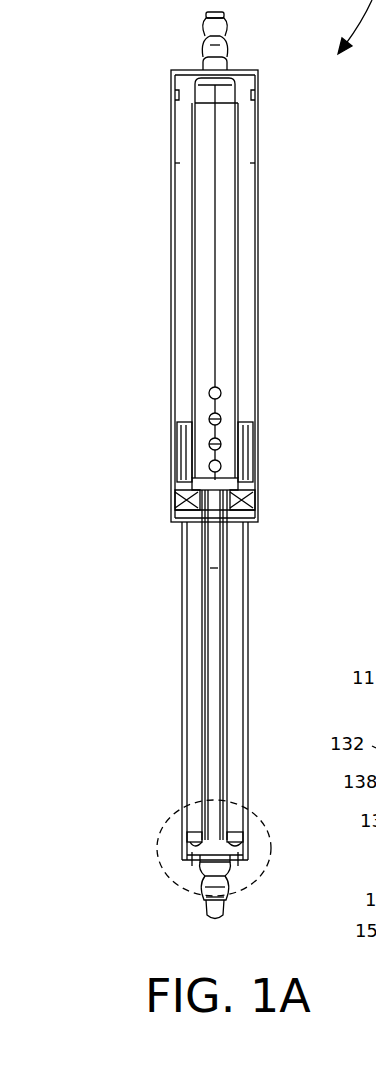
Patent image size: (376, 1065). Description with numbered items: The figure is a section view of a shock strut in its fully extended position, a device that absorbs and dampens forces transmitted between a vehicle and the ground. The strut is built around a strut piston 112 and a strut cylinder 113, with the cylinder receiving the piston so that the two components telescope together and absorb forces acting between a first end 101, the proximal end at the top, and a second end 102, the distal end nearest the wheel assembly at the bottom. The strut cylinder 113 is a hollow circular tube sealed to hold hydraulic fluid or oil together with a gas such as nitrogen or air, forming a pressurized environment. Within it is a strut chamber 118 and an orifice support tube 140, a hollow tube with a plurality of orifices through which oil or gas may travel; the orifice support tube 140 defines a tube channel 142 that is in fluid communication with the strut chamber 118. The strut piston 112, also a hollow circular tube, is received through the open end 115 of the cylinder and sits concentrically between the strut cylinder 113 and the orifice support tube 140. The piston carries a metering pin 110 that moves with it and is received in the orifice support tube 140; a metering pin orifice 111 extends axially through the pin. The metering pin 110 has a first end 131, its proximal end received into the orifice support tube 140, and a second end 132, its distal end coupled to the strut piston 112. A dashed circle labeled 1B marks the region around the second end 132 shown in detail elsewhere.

The first end 101 is at (158, 41).
The second end 102 is at (135, 898).
The metering pin 110 is at (205, 710).
The metering pin orifice 111 is at (208, 752).
The strut piston 112 is at (182, 583).
The strut cylinder 113 is at (172, 385).
The open end 115 is at (255, 530).
The strut chamber 118 is at (253, 215).
The first end 131 is at (243, 490).
The second end 132 is at (258, 840).
The orifice support tube 140 is at (240, 285).
The tube channel 142 is at (240, 330).
The detail region of FIG. 1B is at (157, 838).